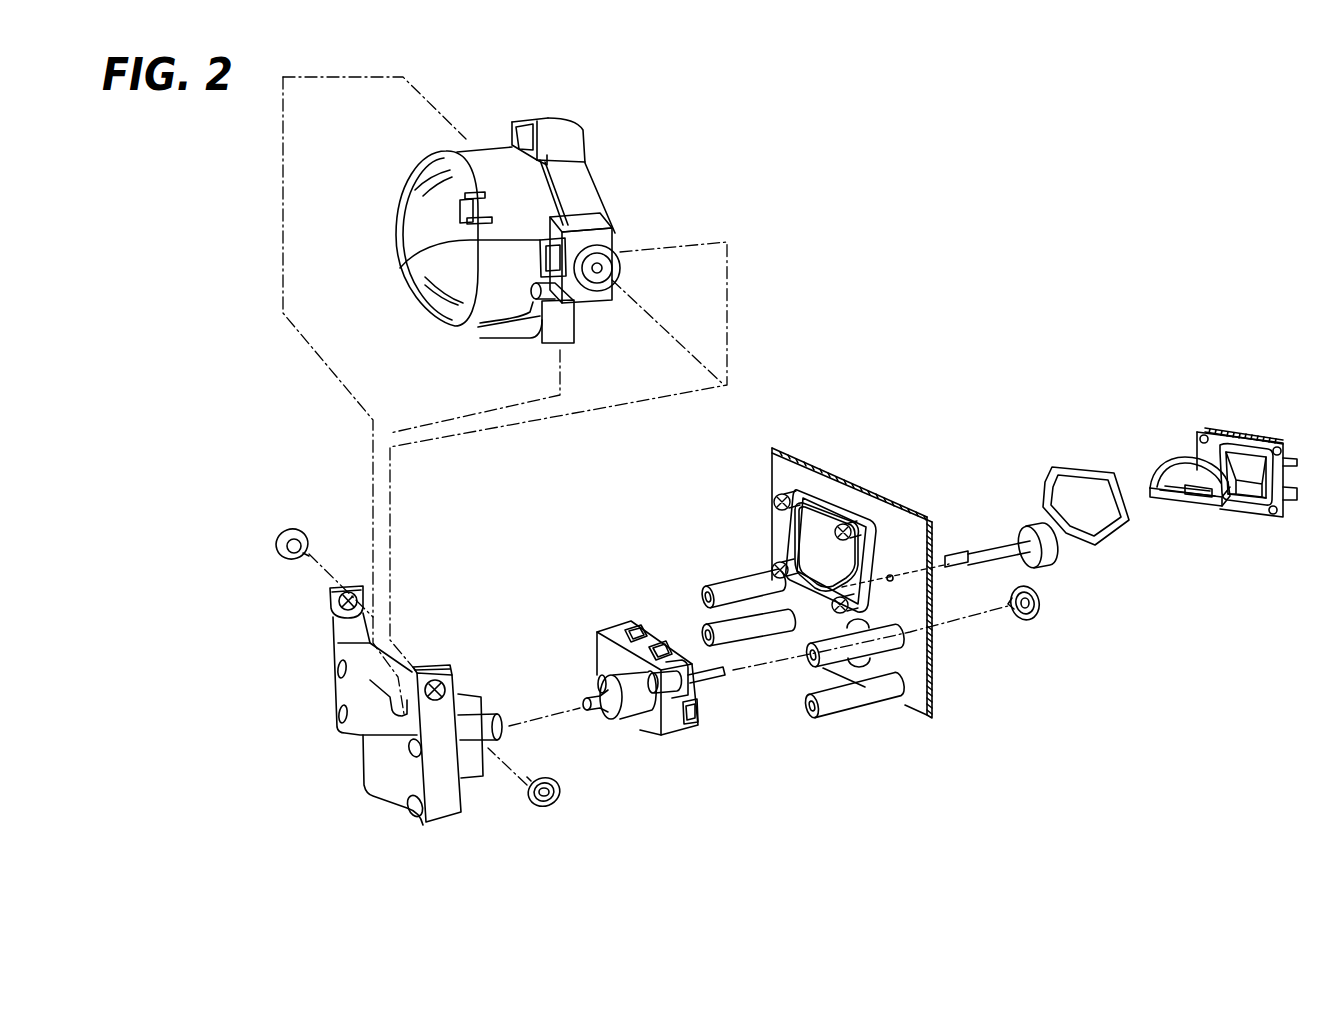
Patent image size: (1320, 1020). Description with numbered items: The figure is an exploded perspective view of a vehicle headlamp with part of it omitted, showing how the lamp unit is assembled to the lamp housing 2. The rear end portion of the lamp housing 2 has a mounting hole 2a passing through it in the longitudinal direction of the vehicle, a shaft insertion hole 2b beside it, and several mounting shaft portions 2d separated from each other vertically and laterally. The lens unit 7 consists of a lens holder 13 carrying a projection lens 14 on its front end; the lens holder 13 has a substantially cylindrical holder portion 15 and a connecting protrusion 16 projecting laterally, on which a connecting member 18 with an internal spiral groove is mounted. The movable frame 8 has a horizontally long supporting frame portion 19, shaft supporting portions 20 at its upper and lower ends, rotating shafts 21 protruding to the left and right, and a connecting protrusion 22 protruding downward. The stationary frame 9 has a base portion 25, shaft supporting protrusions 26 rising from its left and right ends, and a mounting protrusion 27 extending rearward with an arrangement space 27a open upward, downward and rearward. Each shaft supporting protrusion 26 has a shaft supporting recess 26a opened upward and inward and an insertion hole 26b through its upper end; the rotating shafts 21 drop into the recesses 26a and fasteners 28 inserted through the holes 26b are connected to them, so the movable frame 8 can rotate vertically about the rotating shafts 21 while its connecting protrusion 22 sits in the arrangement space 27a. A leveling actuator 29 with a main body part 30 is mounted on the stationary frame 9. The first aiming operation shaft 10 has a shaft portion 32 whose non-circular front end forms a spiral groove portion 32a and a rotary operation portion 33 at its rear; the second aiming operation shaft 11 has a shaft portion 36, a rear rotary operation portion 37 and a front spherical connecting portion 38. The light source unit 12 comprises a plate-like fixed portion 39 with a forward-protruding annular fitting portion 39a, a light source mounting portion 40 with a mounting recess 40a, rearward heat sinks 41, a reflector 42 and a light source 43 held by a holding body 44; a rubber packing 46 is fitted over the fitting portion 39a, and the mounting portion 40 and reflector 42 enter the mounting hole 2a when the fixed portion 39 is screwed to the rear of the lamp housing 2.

The lamp housing 2 is at (778, 582).
The mounting hole 2a is at (808, 528).
The shaft insertion hole 2b is at (890, 575).
The mounting shaft portion 2d is at (724, 588).
The lens unit 7 is at (447, 192).
The movable frame 8 is at (561, 227).
The stationary frame 9 is at (396, 682).
The first aiming operation shaft 10 is at (1019, 502).
The second aiming operation shaft 11 is at (696, 702).
The light source unit 12 is at (1189, 477).
The lens holder 13 is at (457, 150).
The projection lens 14 is at (398, 228).
The holder portion 15 is at (490, 146).
The connecting protrusion 16 is at (580, 222).
The connecting member 18 is at (400, 268).
The supporting frame portion 19 is at (573, 186).
The shaft supporting portion 20 is at (545, 118).
The rotating shaft 21 is at (604, 268).
The connecting protrusion 22 is at (553, 344).
The base portion 25 is at (383, 785).
The shaft supporting protrusion 26 is at (330, 600).
The shaft supporting recess 26a is at (351, 586).
The insertion hole 26b is at (332, 609).
The mounting protrusion 27 is at (468, 780).
The arrangement space 27a is at (390, 685).
The fastener 28 is at (286, 533).
The leveling actuator 29 is at (630, 663).
The main body part 30 is at (606, 627).
The shaft portion 32 is at (978, 479).
The spiral groove portion 32a is at (960, 558).
The rotary operation portion 33 is at (1048, 550).
The shaft portion 36 is at (716, 684).
The rotary operation portion 37 is at (1036, 605).
The spherical connecting portion 38 is at (590, 712).
The fixed portion 39 is at (1239, 452).
The fitting portion 39a is at (1280, 435).
The light source mounting portion 40 is at (1178, 556).
The mounting recess 40a is at (1182, 492).
The heat sink 41 is at (1232, 432).
The reflector 42 is at (1155, 444).
The light source 43 is at (1153, 468).
The holding body 44 is at (1205, 495).
The packing 46 is at (1078, 468).